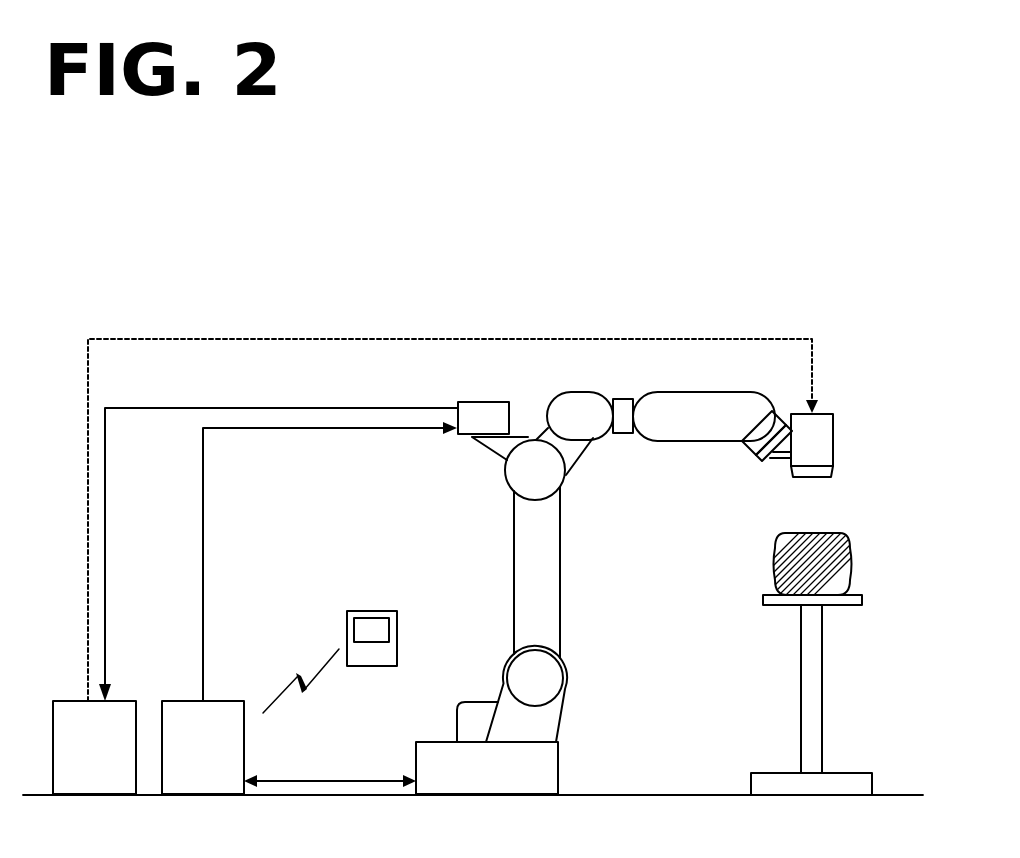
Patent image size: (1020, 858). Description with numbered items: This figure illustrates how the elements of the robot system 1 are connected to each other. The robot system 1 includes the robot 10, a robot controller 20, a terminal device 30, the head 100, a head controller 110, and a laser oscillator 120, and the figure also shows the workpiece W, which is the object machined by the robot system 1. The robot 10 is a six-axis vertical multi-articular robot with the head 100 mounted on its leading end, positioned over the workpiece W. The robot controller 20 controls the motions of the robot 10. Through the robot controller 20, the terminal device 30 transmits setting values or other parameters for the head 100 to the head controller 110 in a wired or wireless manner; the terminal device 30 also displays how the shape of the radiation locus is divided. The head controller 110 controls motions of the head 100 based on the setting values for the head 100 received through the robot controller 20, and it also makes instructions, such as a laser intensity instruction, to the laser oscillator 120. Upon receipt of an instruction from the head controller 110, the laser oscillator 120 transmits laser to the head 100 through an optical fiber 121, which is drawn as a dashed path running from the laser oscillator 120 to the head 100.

The robot system 1 is at (568, 285).
The robot 10 is at (612, 497).
The robot controller 20 is at (222, 700).
The terminal device 30 is at (385, 612).
The head 100 is at (812, 433).
The head controller 110 is at (482, 418).
The laser oscillator 120 is at (118, 700).
The optical fiber 121 is at (265, 339).
The workpiece W is at (843, 550).